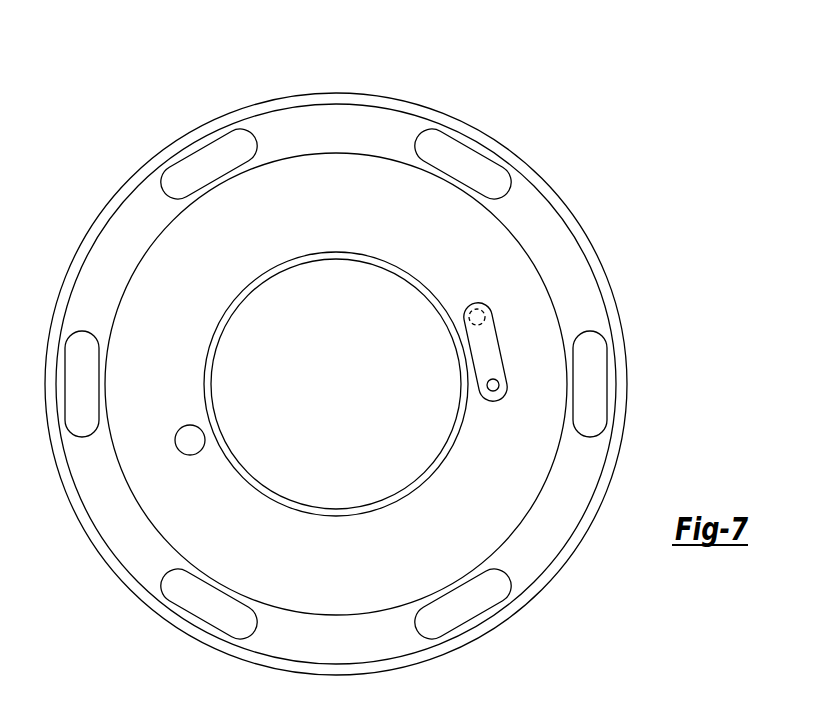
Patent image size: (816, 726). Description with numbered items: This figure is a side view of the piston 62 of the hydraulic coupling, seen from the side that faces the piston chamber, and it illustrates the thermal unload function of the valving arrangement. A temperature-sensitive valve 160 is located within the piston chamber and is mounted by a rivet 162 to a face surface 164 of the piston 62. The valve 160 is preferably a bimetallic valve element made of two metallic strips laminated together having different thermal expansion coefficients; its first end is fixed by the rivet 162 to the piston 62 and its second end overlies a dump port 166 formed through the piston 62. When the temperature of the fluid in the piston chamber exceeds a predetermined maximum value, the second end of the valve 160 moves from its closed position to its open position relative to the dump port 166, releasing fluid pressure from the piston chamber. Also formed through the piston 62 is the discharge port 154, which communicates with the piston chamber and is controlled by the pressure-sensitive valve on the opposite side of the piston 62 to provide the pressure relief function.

The piston 62 is at (306, 135).
The discharge port 154 is at (190, 447).
The temperature-sensitive valve 160 is at (493, 346).
The rivet 162 is at (487, 387).
The face surface 164 is at (488, 262).
The dump port 166 is at (486, 317).